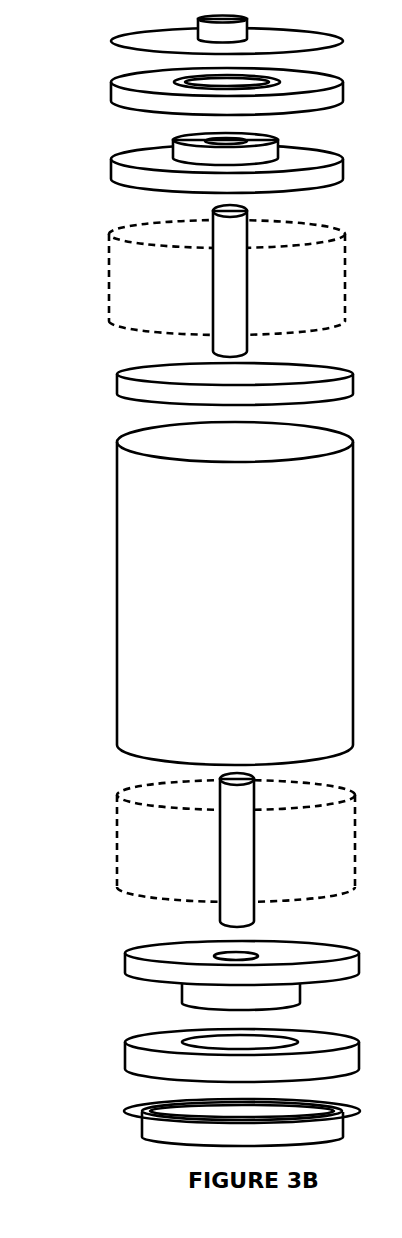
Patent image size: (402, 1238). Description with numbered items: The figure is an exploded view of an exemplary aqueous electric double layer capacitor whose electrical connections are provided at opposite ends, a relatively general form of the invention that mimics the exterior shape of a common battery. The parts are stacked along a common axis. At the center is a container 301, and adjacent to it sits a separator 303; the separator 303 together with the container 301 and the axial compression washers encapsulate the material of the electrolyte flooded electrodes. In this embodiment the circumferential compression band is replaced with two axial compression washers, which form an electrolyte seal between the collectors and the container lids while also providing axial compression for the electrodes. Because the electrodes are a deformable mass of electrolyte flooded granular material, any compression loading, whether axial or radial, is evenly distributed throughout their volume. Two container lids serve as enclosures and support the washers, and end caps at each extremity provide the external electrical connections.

The container 301 is at (143, 590).
The separator 303 is at (175, 373).